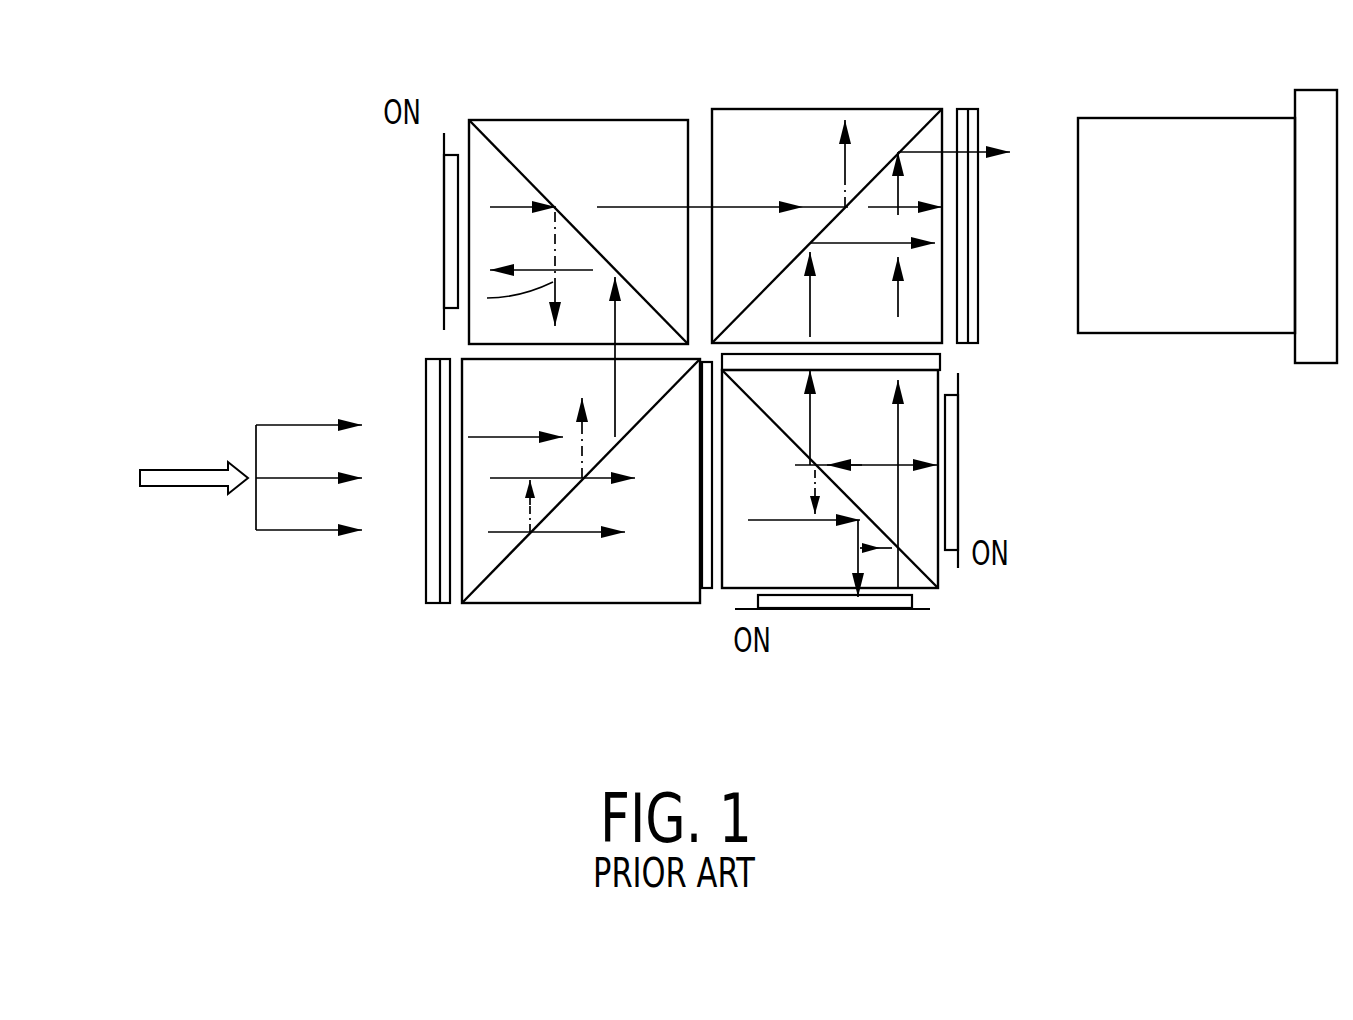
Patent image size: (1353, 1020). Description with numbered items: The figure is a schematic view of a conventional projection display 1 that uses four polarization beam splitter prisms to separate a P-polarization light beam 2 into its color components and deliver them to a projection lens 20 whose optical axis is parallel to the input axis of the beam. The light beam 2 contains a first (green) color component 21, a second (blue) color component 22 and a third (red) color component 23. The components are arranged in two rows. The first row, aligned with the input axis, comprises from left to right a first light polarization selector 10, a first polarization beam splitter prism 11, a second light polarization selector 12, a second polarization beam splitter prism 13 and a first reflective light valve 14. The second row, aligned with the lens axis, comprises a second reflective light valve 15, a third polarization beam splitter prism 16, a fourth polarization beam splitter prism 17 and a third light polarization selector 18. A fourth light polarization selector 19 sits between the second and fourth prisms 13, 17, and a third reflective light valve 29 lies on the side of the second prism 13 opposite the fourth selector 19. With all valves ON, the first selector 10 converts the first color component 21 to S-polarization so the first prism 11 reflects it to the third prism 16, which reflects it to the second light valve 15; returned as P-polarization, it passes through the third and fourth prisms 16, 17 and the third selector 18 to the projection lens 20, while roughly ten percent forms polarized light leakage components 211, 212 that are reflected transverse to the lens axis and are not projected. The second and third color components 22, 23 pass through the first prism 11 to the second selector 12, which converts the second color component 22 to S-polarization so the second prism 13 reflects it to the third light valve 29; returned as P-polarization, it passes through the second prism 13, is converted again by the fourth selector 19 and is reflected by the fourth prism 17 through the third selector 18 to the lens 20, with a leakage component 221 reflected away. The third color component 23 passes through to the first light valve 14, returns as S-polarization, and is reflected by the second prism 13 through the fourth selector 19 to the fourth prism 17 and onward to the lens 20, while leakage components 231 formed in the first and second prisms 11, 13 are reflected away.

The conventional projection display 1 is at (703, 58).
The P-polarization light beam 2 is at (194, 527).
The first light polarization selector 10 is at (417, 520).
The first polarization beam splitter prism 11 is at (581, 534).
The second light polarization selector 12 is at (723, 544).
The second polarization beam splitter prism 13 is at (873, 495).
The first reflective light valve 14 is at (988, 470).
The second reflective light valve 15 is at (398, 231).
The third polarization beam splitter prism 16 is at (658, 238).
The fourth polarization beam splitter prism 17 is at (861, 189).
The third light polarization selector 18 is at (994, 189).
The fourth light polarization selector 19 is at (882, 376).
The projection lens 20 is at (1207, 287).
The first (green) color component 21 is at (654, 294).
The second (blue) color component 22 is at (679, 395).
The third (red) color component 23 is at (647, 446).
The third reflective light valve 29 is at (841, 639).
The polarized light leakage component 211 is at (440, 297).
The polarized light leakage component 212 is at (884, 94).
The polarized light leakage component 221 is at (870, 610).
The polarized light leakage components 231 is at (680, 593).